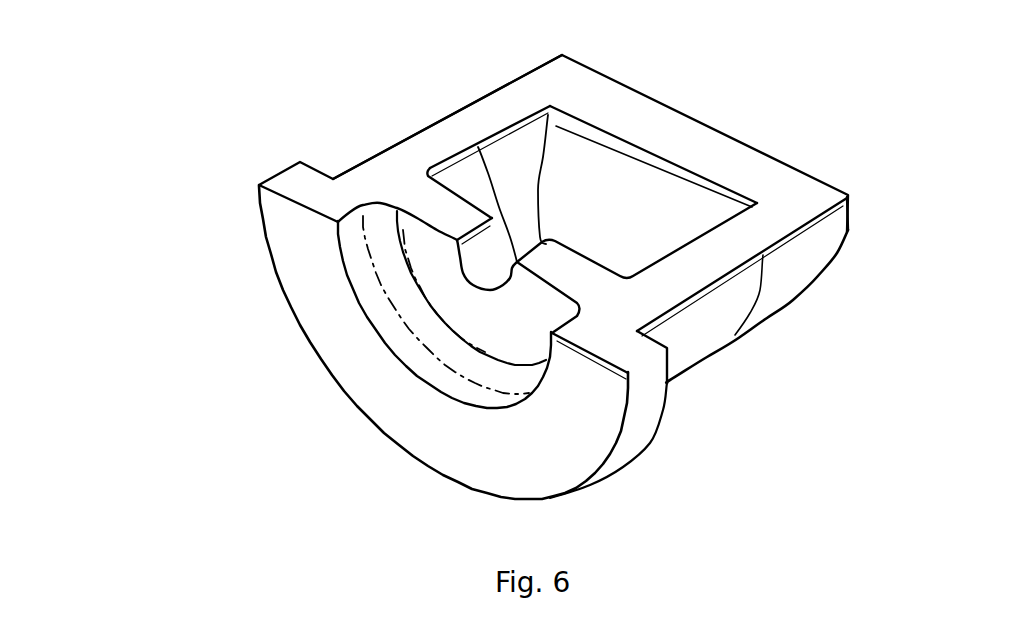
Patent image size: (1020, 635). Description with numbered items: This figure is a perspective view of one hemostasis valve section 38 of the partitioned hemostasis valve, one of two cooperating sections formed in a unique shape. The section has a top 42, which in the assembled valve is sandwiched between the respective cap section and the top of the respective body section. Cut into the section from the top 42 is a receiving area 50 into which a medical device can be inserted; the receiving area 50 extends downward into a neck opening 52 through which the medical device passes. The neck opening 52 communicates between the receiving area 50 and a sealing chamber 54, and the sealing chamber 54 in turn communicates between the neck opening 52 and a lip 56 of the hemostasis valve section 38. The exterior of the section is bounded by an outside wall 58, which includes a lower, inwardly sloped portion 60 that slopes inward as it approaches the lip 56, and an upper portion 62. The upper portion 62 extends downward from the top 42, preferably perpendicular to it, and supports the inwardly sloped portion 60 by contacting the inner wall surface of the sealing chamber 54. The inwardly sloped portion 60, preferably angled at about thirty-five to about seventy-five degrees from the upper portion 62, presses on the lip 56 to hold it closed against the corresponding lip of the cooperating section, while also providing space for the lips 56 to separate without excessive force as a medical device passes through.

The hemostasis valve section 38 is at (138, 146).
The top 42 is at (407, 420).
The receiving area 50 is at (437, 283).
The neck opening 52 is at (482, 257).
The sealing chamber 54 is at (645, 228).
The lip 56 is at (667, 127).
The outside wall 58 is at (485, 77).
The inwardly sloped portion 60 is at (789, 290).
The upper portion 62 is at (705, 337).